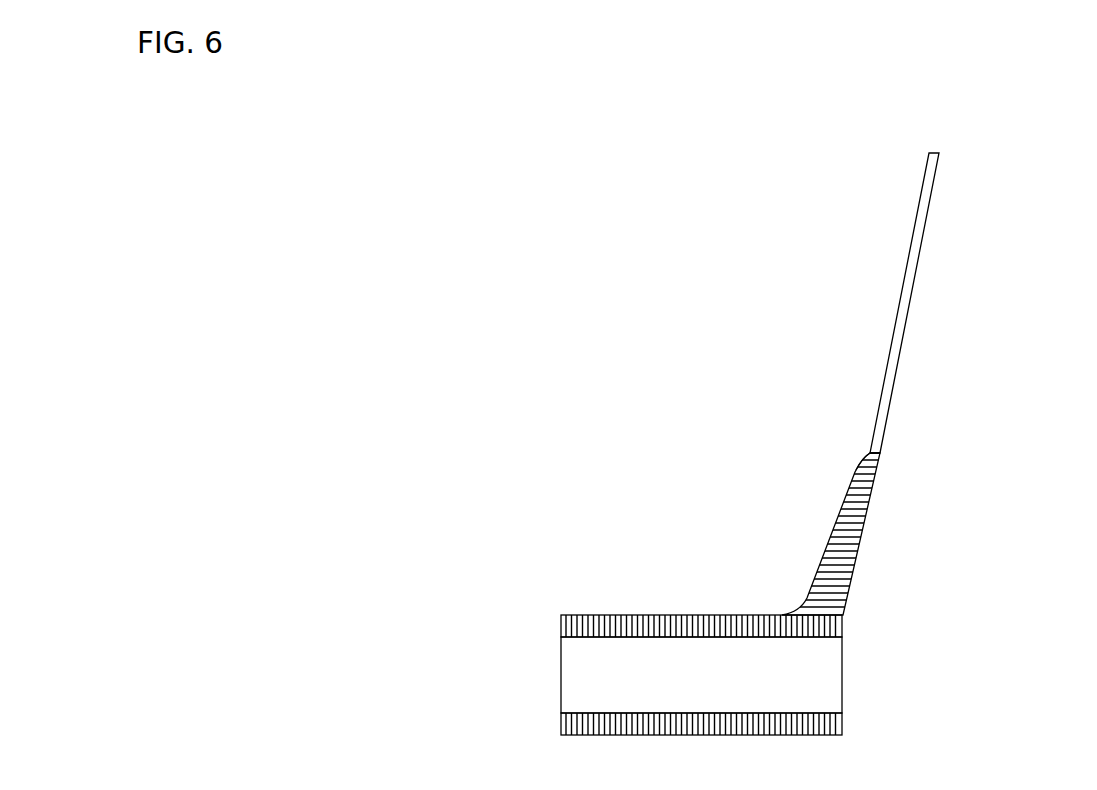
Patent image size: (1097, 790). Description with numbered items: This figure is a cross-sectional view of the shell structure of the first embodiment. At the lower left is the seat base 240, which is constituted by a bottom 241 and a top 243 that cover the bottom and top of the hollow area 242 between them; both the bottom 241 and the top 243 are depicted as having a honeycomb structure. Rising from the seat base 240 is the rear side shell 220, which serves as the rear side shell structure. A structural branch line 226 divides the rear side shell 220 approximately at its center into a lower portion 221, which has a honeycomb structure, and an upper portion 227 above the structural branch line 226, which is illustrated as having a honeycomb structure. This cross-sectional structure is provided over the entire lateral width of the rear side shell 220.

The rear side shell 220 is at (852, 384).
The upper portion 227 is at (908, 293).
The structural branch line 226 is at (875, 450).
The lower portion 221 is at (846, 526).
The seat base 240 is at (718, 671).
The top 243 is at (573, 632).
The hollow area 242 is at (580, 678).
The bottom 241 is at (575, 732).